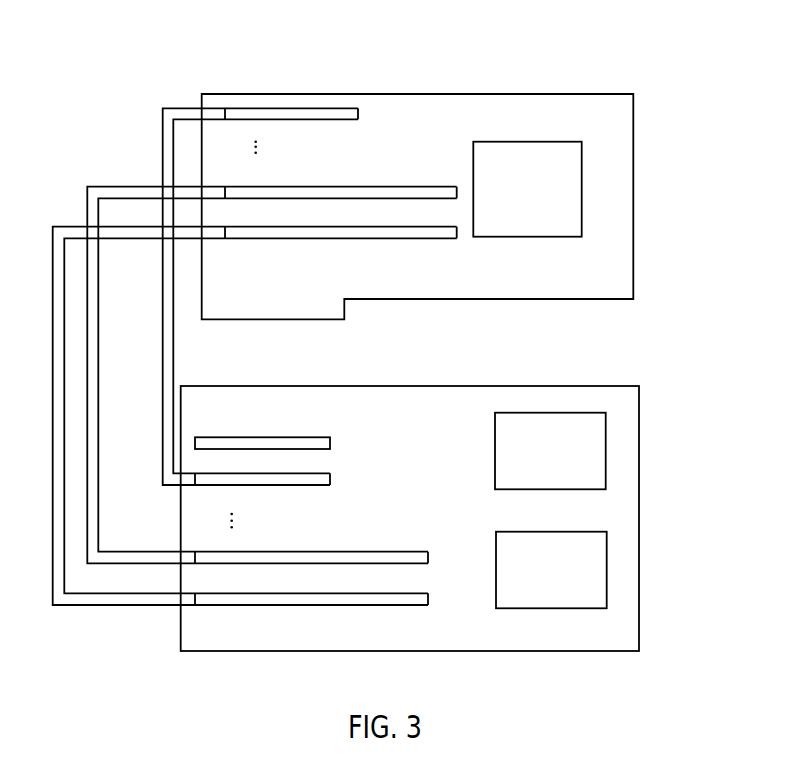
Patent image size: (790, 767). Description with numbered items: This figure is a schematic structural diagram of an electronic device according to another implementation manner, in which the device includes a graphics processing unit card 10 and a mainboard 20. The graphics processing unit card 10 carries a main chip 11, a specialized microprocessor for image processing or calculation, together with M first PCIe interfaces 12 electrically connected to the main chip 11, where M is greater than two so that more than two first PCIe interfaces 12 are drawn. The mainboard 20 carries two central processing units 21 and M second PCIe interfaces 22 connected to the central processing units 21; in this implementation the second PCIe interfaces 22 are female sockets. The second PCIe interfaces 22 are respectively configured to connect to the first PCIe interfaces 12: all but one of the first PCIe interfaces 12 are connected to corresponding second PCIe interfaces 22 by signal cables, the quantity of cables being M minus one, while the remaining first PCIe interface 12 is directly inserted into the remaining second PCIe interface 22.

The graphics processing unit card 10 is at (502, 117).
The main chip 11 is at (557, 185).
The first PCIe interfaces 12 is at (338, 235).
The mainboard 20 is at (600, 513).
The central processing unit 21 is at (522, 438).
The second PCIe interfaces 22 is at (343, 600).